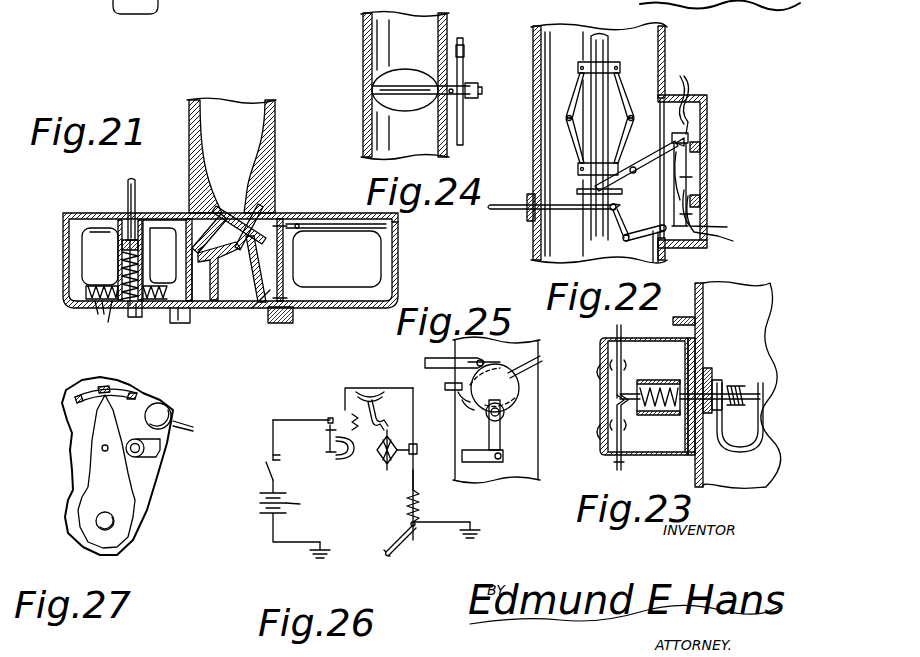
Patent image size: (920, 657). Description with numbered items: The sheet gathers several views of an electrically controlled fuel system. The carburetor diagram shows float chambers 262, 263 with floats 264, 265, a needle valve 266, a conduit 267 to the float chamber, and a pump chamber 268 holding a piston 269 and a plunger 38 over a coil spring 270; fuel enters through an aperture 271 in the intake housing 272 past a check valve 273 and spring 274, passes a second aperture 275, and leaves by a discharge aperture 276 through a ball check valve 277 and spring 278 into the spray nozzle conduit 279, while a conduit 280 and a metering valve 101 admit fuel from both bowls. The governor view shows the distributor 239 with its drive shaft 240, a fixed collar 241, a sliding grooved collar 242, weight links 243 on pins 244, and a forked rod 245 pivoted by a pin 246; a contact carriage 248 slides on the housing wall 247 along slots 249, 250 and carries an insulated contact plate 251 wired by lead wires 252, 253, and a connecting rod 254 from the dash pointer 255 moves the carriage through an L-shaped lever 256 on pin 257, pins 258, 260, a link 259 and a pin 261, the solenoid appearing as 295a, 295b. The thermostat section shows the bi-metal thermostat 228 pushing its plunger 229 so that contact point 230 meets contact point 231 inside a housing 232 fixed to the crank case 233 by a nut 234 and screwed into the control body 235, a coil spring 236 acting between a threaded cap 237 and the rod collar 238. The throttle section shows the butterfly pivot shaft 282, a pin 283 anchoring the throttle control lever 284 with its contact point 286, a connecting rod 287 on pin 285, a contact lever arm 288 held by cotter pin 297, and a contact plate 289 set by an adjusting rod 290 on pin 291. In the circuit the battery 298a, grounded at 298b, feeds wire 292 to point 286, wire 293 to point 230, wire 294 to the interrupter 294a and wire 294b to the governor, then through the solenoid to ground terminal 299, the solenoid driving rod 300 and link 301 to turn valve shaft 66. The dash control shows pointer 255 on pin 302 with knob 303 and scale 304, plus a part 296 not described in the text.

In FIG. 21, the rod 38 is at (137, 191).
In FIG. 21, the metering valve 101 is at (262, 214).
In FIG. 21, the float chamber 262 is at (78, 241).
In FIG. 21, the float chamber 263 is at (384, 236).
In FIG. 21, the float 264 is at (92, 262).
In FIG. 21, the float 265 is at (336, 255).
In FIG. 21, the needle valve 266 is at (284, 270).
In FIG. 21, the conduit 267 is at (246, 308).
In FIG. 21, the pump chamber 268 is at (126, 226).
In FIG. 21, the piston 269 is at (121, 249).
In FIG. 21, the coil spring 270 is at (124, 266).
In FIG. 21, the aperture 271 is at (88, 294).
In FIG. 21, the intake housing 272 is at (86, 300).
In FIG. 21, the check valve 273 is at (99, 310).
In FIG. 21, the spring 274 is at (112, 310).
In FIG. 21, the aperture 275 is at (132, 318).
In FIG. 21, the discharge aperture 276 is at (138, 318).
In FIG. 21, the ball check valve 277 is at (152, 312).
In FIG. 21, the spring 278 is at (180, 323).
In FIG. 21, the spray nozzle conduit 279 is at (194, 208).
In FIG. 21, the conduit 280 is at (200, 283).
In FIG. 24, the pivot shaft 282 is at (366, 92).
In FIG. 24, the pin 283 is at (448, 103).
In FIG. 24, the throttle control lever 284 is at (457, 65).
In FIG. 25, the throttle control lever 284 is at (458, 394).
In FIG. 25, the pin 285 is at (484, 360).
In FIG. 24, the contact point 286 is at (456, 48).
In FIG. 25, the contact point 286 is at (462, 404).
In FIG. 26, the contact point 286 is at (266, 462).
In FIG. 25, the connecting rod 287 is at (440, 360).
In FIG. 25, the contact lever arm 288 is at (501, 431).
In FIG. 25, the contact plate 289 is at (520, 380).
In FIG. 26, the contact plate 289 is at (278, 458).
In FIG. 25, the adjusting rod 290 is at (466, 463).
In FIG. 25, the pin 291 is at (502, 460).
In FIG. 25, the electric wire 292 is at (446, 384).
In FIG. 26, the electric wire 292 is at (274, 489).
In FIG. 25, the electrical wire 293 is at (541, 362).
In FIG. 23, the electrical wire 293 is at (614, 466).
In FIG. 26, the electrical wire 293 is at (298, 420).
In FIG. 23, the wire 294 is at (617, 340).
In FIG. 26, the wire 294 is at (345, 390).
In FIG. 26, the interrupter 294a is at (372, 388).
In FIG. 22, the wire 294b is at (688, 79).
In FIG. 26, the wire 294b is at (416, 431).
In FIG. 22, the link 295a is at (752, 115).
In FIG. 26, the resistance 295b is at (420, 505).
In FIG. 27, the bushing 296 is at (170, 414).
In FIG. 24, the cotter pin 297 is at (481, 90).
In FIG. 26, the battery 298a is at (316, 514).
In FIG. 26, the ground 298b is at (322, 552).
In FIG. 26, the ground terminal 299 is at (478, 539).
In FIG. 26, the rod 300 is at (412, 523).
In FIG. 26, the link 301 is at (408, 533).
In FIG. 26, the valve shaft 66 is at (388, 555).
In FIG. 27, the pin 302 is at (101, 448).
In FIG. 27, the knob 303 is at (98, 524).
In FIG. 27, the scale 304 is at (125, 392).
In FIG. 23, the thermostat 228 is at (738, 385).
In FIG. 26, the thermostat 228 is at (338, 456).
In FIG. 23, the plunger 229 is at (752, 386).
In FIG. 23, the contact point 230 is at (612, 412).
In FIG. 26, the contact point 230 is at (330, 417).
In FIG. 23, the contact point 231 is at (616, 398).
In FIG. 26, the contact point 231 is at (328, 433).
In FIG. 23, the housing 232 is at (642, 324).
In FIG. 23, the crank case 233 is at (705, 332).
In FIG. 23, the nut 234 is at (712, 380).
In FIG. 23, the main thermostat control body 235 is at (690, 457).
In FIG. 23, the coil spring 236 is at (670, 416).
In FIG. 23, the screw threaded cap 237 is at (640, 388).
In FIG. 23, the thermostat control rod collar 238 is at (674, 418).
In FIG. 22, the distributor 239 is at (555, 30).
In FIG. 22, the distributor drive shaft 240 is at (609, 42).
In FIG. 22, the collar 241 is at (621, 68).
In FIG. 22, the grooved collar 242 is at (578, 168).
In FIG. 22, the weight links 243 is at (570, 111).
In FIG. 26, the weight links 243 is at (384, 447).
In FIG. 22, the pins 244 is at (566, 118).
In FIG. 22, the forked rod 245 is at (636, 160).
In FIG. 22, the pin 246 is at (630, 178).
In FIG. 22, the wall 247 is at (702, 126).
In FIG. 22, the contact carriage 248 is at (690, 172).
In FIG. 22, the slot 249 is at (701, 148).
In FIG. 22, the slot 250 is at (701, 201).
In FIG. 22, the contact plate 251 is at (693, 181).
In FIG. 22, the lead wire 252 is at (733, 241).
In FIG. 27, the lead wire 252 is at (193, 430).
In FIG. 22, the lead wire 253 is at (728, 227).
In FIG. 26, the lead wire 253 is at (413, 485).
In FIG. 22, the connecting rod 254 is at (524, 214).
In FIG. 27, the connecting rod 254 is at (162, 451).
In FIG. 27, the pointer 255 is at (90, 479).
In FIG. 22, the L-shaped lever 256 is at (650, 250).
In FIG. 22, the pin 257 is at (646, 256).
In FIG. 22, the pin 258 is at (622, 240).
In FIG. 22, the link 259 is at (672, 209).
In FIG. 22, the pin 260 is at (701, 247).
In FIG. 22, the pin 261 is at (683, 212).